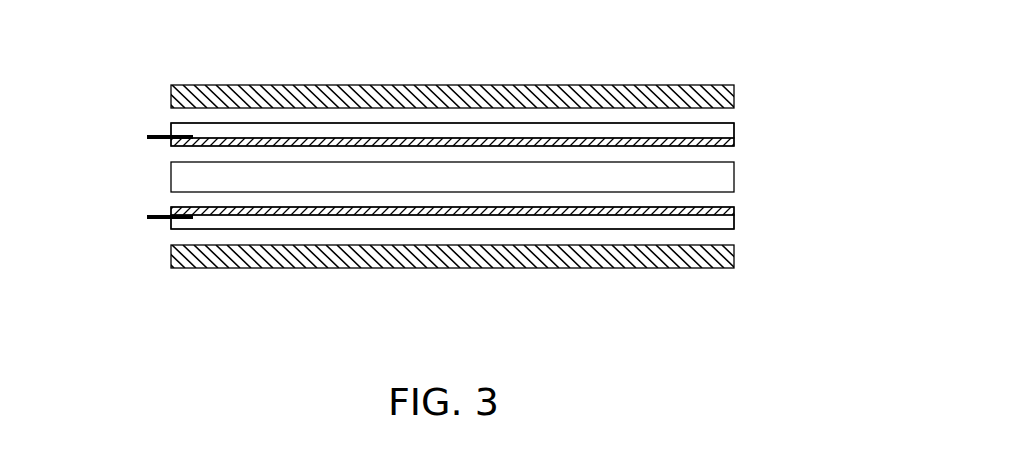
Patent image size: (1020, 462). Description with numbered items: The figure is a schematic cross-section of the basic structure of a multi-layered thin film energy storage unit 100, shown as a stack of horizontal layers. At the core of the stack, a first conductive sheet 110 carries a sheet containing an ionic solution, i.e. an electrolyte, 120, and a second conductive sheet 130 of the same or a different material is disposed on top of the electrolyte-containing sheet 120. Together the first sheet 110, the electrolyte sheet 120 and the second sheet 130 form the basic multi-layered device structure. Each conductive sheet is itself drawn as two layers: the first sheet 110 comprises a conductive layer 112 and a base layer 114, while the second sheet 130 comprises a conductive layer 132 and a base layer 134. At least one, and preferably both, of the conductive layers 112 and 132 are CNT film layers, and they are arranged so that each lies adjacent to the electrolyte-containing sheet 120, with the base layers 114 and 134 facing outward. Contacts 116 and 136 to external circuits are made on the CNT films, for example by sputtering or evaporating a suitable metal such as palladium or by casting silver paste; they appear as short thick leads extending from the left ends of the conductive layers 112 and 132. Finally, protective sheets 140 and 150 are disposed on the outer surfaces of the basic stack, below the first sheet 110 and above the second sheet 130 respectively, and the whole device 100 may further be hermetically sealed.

The multi-layered thin film energy storage unit 100 is at (450, 46).
The protective sheet 150 is at (672, 108).
The second conductive sheet 130 is at (495, 78).
The conductive layer 132 is at (607, 140).
The base layer 134 is at (721, 132).
The contact 136 is at (150, 135).
The sheet containing an ionic solution 120 is at (718, 177).
The first conductive sheet 110 is at (495, 274).
The conductive layer 112 is at (610, 210).
The base layer 114 is at (723, 222).
The contact 116 is at (152, 219).
The protective sheet 140 is at (665, 250).